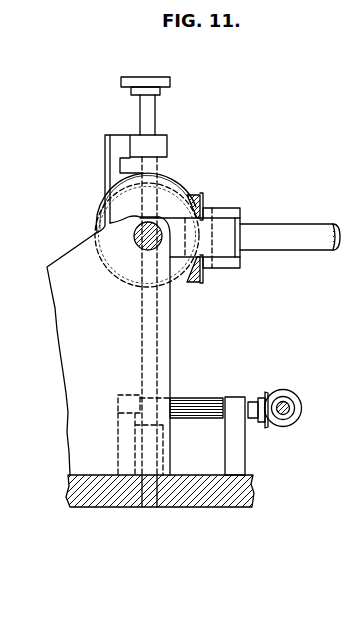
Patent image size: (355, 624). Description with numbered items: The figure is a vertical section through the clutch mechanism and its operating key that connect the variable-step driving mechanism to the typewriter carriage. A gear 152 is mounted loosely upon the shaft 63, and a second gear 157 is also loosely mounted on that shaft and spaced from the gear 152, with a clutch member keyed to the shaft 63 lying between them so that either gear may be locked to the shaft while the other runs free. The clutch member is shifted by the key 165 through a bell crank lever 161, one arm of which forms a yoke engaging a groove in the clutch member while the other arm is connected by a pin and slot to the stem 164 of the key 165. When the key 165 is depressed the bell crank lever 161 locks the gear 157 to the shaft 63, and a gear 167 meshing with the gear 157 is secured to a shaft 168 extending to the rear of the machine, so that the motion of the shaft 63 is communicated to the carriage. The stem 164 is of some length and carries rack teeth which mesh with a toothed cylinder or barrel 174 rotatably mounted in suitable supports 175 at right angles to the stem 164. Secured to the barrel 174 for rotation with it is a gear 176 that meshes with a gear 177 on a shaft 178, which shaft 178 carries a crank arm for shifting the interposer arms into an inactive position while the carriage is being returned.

The clutch-shifting key 165 is at (162, 82).
The bell crank lever 161 is at (163, 180).
The gear 167 is at (193, 196).
The shaft 168 is at (273, 233).
The gear 157 is at (95, 233).
The shaft 63 is at (133, 240).
The gear 152 is at (118, 278).
The stem 164 is at (141, 321).
The toothed cylinder or barrel 174 is at (190, 398).
The supports 175 is at (120, 438).
The gear 176 is at (266, 390).
The gear 177 is at (302, 400).
The shaft 178 is at (288, 418).